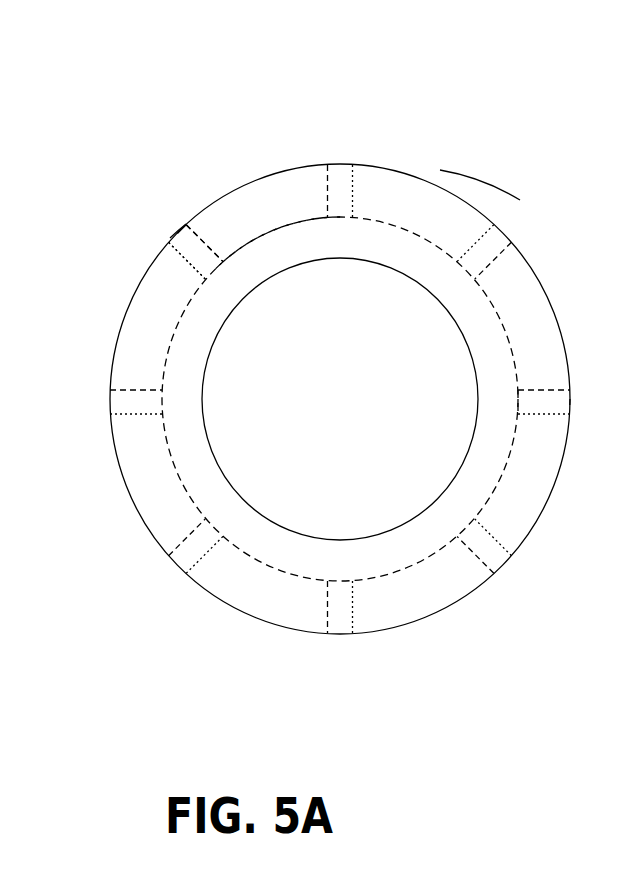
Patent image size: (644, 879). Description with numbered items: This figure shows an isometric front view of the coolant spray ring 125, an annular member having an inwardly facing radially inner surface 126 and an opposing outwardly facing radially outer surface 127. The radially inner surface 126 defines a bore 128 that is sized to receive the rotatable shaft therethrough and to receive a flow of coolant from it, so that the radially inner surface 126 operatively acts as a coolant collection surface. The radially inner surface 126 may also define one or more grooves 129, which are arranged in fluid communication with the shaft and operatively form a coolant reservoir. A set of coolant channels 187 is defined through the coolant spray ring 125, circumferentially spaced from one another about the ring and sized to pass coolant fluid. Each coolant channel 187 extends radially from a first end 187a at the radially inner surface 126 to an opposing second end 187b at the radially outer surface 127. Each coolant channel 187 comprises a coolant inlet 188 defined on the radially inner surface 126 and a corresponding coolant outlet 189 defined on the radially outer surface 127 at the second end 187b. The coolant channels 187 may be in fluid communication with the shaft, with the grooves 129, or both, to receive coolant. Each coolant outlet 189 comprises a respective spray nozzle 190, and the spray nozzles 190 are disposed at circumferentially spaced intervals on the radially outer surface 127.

The coolant spray ring 125 is at (477, 142).
The radially inner surface 126 is at (200, 398).
The radially outer surface 127 is at (528, 257).
The bore 128 is at (262, 437).
The grooves 129 is at (163, 432).
The coolant channels 187 is at (197, 265).
The first end 187a is at (203, 279).
The second end 187b is at (209, 228).
The coolant inlet 188 is at (212, 272).
The coolant outlet 189 is at (177, 231).
The spray nozzle 190 is at (178, 227).